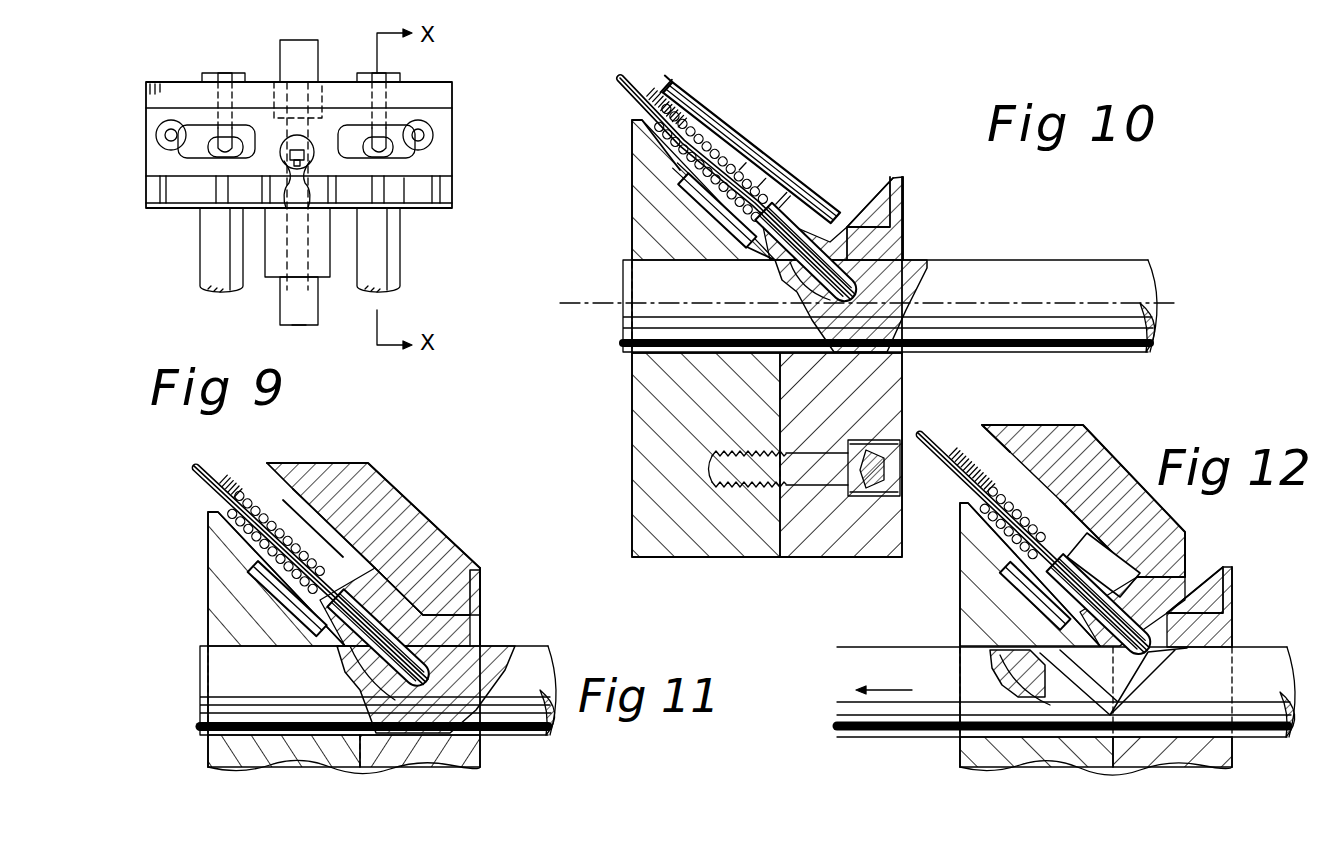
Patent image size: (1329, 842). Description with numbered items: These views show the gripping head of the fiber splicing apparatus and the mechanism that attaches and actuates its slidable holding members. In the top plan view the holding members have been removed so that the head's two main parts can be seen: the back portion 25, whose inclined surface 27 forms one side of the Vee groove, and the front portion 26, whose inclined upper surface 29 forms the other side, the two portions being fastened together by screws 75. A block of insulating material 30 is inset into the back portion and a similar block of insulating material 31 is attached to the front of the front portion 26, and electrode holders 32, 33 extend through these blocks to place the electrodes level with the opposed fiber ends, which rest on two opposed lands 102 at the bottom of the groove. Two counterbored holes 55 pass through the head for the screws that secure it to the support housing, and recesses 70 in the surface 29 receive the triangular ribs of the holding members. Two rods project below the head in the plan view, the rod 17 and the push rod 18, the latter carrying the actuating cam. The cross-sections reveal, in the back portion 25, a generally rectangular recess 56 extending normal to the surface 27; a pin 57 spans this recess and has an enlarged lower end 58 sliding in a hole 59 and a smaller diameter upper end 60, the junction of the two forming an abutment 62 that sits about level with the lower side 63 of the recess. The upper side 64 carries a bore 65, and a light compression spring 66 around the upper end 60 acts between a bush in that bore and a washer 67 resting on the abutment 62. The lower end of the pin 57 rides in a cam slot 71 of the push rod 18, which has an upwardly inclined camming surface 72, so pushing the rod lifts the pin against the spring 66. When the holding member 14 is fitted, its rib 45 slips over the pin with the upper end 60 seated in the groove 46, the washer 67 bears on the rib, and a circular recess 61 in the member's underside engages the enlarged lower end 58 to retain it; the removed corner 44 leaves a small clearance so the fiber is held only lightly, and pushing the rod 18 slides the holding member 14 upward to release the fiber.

In FIG. 11, the holding member 14 is at (368, 478).
In FIG. 9, the guide pin 17 is at (210, 256).
In FIG. 9, the push rod 18 is at (398, 274).
In FIG. 10, the push rod 18 is at (1040, 272).
In FIG. 11, the push rod 18 is at (505, 737).
In FIG. 12, the push rod 18 is at (895, 738).
In FIG. 9, the back portion 25 is at (440, 104).
In FIG. 10, the back portion 25 is at (650, 100).
In FIG. 9, the front portion 26 is at (447, 203).
In FIG. 10, the front portion 26 is at (897, 230).
In FIG. 9, the inclined surface 27 is at (438, 143).
In FIG. 10, the inclined surface 27 is at (692, 92).
In FIG. 9, the upper surface 29 is at (405, 196).
In FIG. 9, the block of insulating material 30 is at (274, 84).
In FIG. 9, the block of insulating material 31 is at (273, 266).
In FIG. 9, the electrode holder 32 is at (302, 52).
In FIG. 9, the electrode holder 33 is at (310, 307).
In FIG. 11, the removed corner 44 is at (467, 572).
In FIG. 11, the rib 45 is at (392, 520).
In FIG. 11, the groove 46 is at (318, 607).
In FIG. 9, the counterbored holes 55 is at (158, 130).
In FIG. 9, the rectangular recess 56 is at (384, 120).
In FIG. 10, the rectangular recess 56 is at (763, 190).
In FIG. 10, the pin 57 is at (622, 84).
In FIG. 11, the pin 57 is at (202, 468).
In FIG. 10, the enlarged lower end 58 is at (888, 255).
In FIG. 10, the hole 59 is at (808, 225).
In FIG. 10, the smaller diameter upper end 60 is at (712, 140).
In FIG. 11, the smaller diameter upper end 60 is at (290, 576).
In FIG. 10, the circular recess 61 is at (718, 103).
In FIG. 10, the abutment 62 is at (747, 252).
In FIG. 10, the lower side 63 is at (793, 207).
In FIG. 10, the upper side 64 is at (732, 160).
In FIG. 10, the bore 65 is at (750, 177).
In FIG. 10, the compression spring 66 is at (665, 186).
In FIG. 10, the washer 67 is at (665, 205).
In FIG. 9, the recess 70 is at (378, 192).
In FIG. 10, the recess 70 is at (880, 200).
In FIG. 12, the recess 70 is at (1208, 598).
In FIG. 10, the cam slot 71 is at (870, 272).
In FIG. 11, the cam slot 71 is at (440, 667).
In FIG. 12, the cam slot 71 is at (1060, 658).
In FIG. 10, the camming surface 72 is at (865, 292).
In FIG. 11, the camming surface 72 is at (460, 683).
In FIG. 12, the camming surface 72 is at (1043, 677).
In FIG. 10, the screws 75 is at (865, 448).
In FIG. 9, the land 102 is at (299, 326).